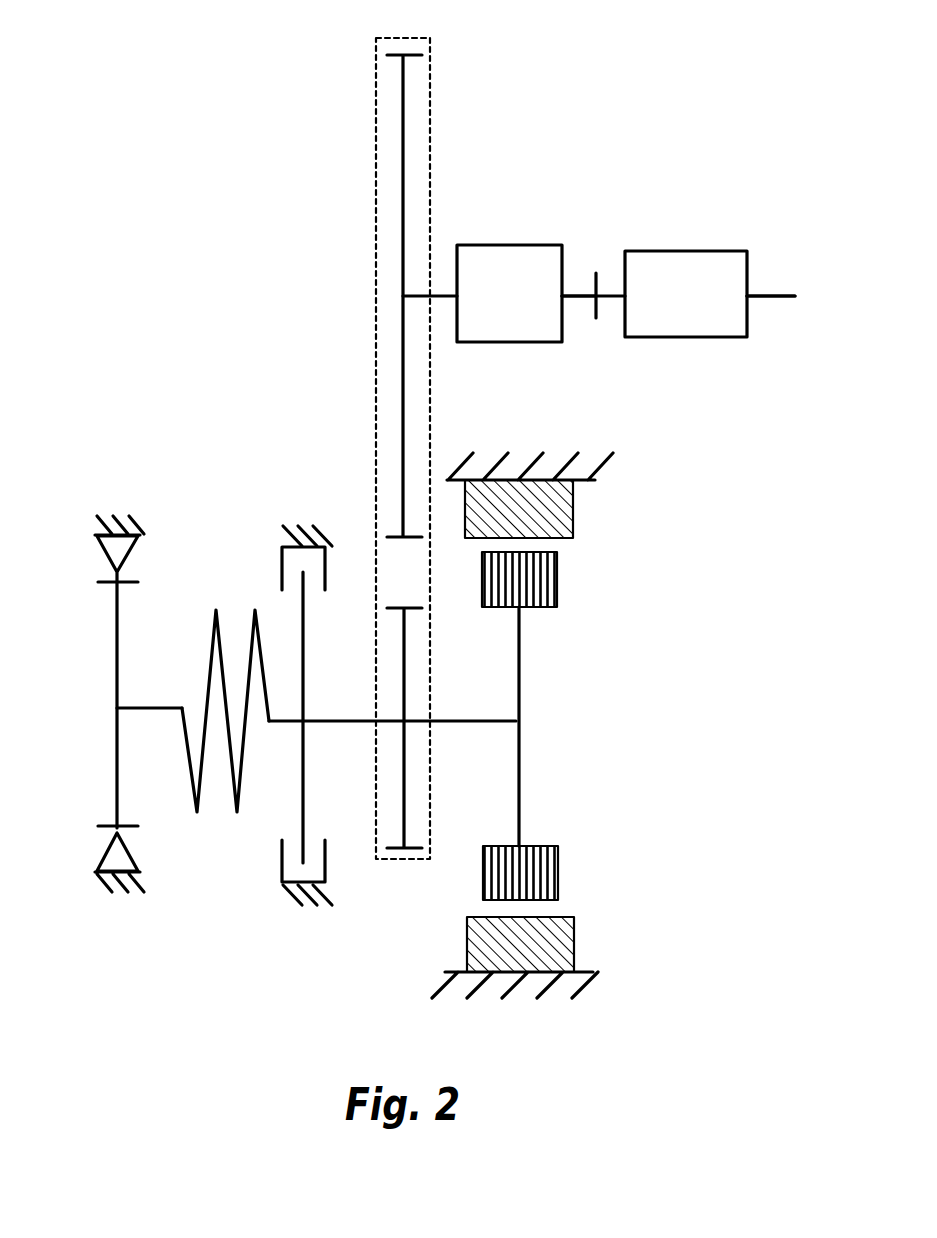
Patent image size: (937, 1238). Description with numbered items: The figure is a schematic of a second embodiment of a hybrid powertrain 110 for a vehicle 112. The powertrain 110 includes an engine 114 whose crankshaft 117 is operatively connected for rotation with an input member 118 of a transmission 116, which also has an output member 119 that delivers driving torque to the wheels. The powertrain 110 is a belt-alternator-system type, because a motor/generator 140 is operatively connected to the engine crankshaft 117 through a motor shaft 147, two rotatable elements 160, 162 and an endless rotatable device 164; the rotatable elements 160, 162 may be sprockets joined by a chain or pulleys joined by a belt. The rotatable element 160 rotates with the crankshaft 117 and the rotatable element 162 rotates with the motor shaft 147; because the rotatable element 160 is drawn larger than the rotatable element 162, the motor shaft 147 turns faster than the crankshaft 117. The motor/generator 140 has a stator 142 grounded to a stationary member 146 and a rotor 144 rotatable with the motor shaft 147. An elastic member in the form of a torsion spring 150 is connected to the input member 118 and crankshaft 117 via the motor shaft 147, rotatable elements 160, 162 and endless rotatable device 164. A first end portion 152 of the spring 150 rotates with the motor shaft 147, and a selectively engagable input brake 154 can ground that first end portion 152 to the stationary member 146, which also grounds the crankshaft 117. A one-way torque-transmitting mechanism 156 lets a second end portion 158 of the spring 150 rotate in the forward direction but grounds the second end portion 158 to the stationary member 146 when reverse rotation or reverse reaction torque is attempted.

The hybrid powertrain 110 is at (508, 195).
The vehicle 112 is at (610, 86).
The engine 114 is at (509, 293).
The transmission 116 is at (686, 294).
The crankshaft 117 is at (577, 292).
The input member 118 is at (612, 300).
The output member 119 is at (770, 302).
The motor/generator 140 is at (564, 672).
The stator 142 is at (575, 508).
The rotor 144 is at (559, 576).
The stationary member 146 is at (313, 534).
The motor shaft 147 is at (469, 723).
The torsion spring 150 is at (217, 814).
The first end portion 152 is at (284, 716).
The input brake 154 is at (280, 806).
The one-way torque-transmitting mechanism 156 is at (90, 832).
The second end portion 158 is at (147, 707).
The rotatable element 160 is at (405, 129).
The rotatable element 162 is at (400, 684).
The endless rotatable device 164 is at (376, 322).